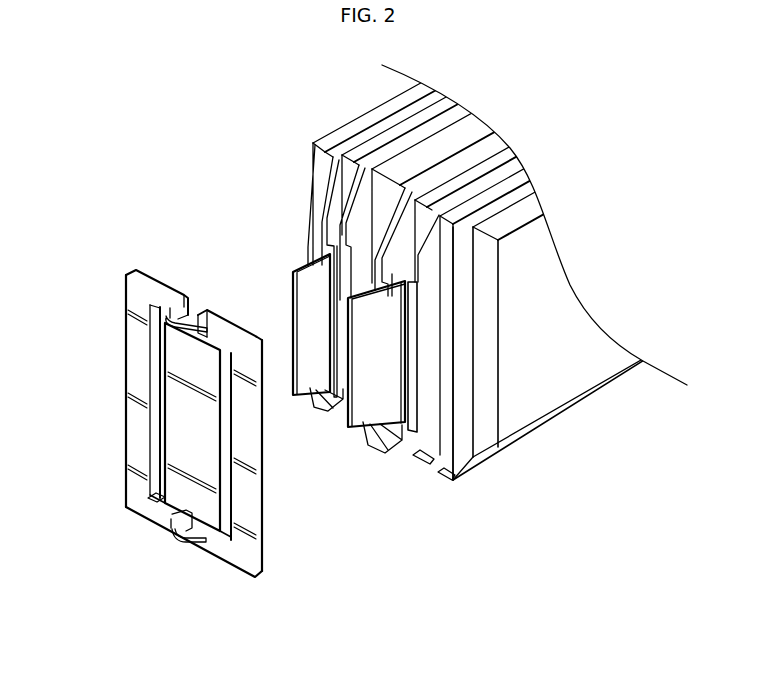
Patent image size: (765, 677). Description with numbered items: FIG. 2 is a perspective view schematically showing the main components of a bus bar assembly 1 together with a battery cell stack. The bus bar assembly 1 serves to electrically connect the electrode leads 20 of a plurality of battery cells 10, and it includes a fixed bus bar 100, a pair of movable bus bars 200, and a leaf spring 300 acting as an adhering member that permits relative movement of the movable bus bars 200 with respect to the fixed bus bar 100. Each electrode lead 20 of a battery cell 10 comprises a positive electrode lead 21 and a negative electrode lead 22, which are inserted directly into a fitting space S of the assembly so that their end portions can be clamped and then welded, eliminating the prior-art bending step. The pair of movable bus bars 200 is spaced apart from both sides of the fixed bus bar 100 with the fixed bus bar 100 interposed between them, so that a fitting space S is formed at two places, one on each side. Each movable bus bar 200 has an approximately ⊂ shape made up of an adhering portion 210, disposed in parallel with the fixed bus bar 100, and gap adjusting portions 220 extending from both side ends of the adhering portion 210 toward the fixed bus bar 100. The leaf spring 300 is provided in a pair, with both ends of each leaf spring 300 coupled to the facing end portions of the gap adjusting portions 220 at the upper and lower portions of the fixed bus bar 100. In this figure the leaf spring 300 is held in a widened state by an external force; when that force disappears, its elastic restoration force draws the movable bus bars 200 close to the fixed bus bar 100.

The bus bar assembly 1 is at (93, 240).
The battery cell 10 is at (383, 108).
The electrode lead 20 is at (385, 488).
The positive electrode lead 21 is at (382, 412).
The negative electrode lead 22 is at (318, 373).
The fixed bus bar 100 is at (150, 500).
The movable bus bar 200 is at (118, 470).
The adhering portion 210 is at (140, 416).
The gap adjusting portion 220 is at (162, 297).
The leaf spring 300 is at (172, 321).
The fitting space S is at (160, 386).